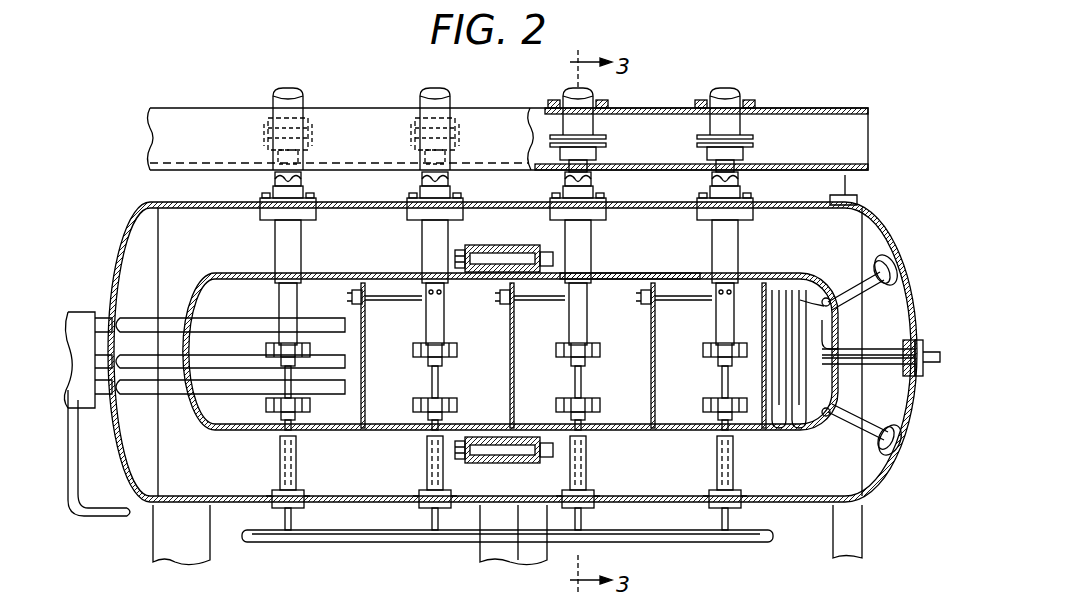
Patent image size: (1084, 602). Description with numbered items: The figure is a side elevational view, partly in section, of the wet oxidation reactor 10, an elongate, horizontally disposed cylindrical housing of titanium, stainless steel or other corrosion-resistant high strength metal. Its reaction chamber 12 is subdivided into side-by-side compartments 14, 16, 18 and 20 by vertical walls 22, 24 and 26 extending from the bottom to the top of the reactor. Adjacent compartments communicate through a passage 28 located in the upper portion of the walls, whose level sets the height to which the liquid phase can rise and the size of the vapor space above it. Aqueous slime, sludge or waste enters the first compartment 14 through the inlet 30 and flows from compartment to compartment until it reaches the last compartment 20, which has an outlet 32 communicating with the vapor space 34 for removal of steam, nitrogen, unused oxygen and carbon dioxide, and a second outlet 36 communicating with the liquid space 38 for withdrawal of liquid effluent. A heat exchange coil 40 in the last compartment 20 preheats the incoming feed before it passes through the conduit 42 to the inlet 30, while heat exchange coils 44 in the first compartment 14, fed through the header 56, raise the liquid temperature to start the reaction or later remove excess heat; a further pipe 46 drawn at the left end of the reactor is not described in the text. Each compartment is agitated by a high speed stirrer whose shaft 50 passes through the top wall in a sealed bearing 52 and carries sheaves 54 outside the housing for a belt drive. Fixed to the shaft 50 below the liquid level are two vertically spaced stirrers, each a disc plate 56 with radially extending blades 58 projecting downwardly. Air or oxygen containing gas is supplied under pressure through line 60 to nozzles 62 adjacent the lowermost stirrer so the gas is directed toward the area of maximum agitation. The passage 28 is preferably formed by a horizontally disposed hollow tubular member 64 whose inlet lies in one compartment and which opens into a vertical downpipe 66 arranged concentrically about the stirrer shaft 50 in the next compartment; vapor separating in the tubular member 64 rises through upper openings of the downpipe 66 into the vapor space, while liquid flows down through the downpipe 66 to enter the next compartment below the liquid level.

The reactor 10 is at (245, 272).
The reaction chamber 12 is at (656, 276).
The first compartment 14 is at (258, 306).
The second compartment 16 is at (490, 328).
The third compartment 18 is at (630, 328).
The last compartment 20 is at (760, 388).
The vertical wall 22 is at (366, 318).
The vertical wall 24 is at (515, 318).
The vertical wall 26 is at (656, 318).
The passage 28 is at (358, 290).
The inlet 30 is at (222, 336).
The outlet 32 is at (818, 290).
The vapor space 34 is at (750, 290).
The second outlet 36 is at (812, 418).
The liquid space 38 is at (764, 432).
The heat exchange coil 40 is at (848, 392).
The conduit 42 is at (668, 346).
The heat exchange coils 44 is at (228, 422).
The drain pipe 46 is at (90, 408).
The shaft 50 is at (298, 298).
The sealed bearing 52 is at (302, 272).
The sheaves 54 is at (312, 133).
The disc plate 56 is at (458, 348).
The blades 58 is at (450, 362).
The line 60 is at (402, 546).
The nozzles 62 is at (300, 432).
The hollow tubular member 64 is at (390, 296).
The downpipe 66 is at (452, 294).